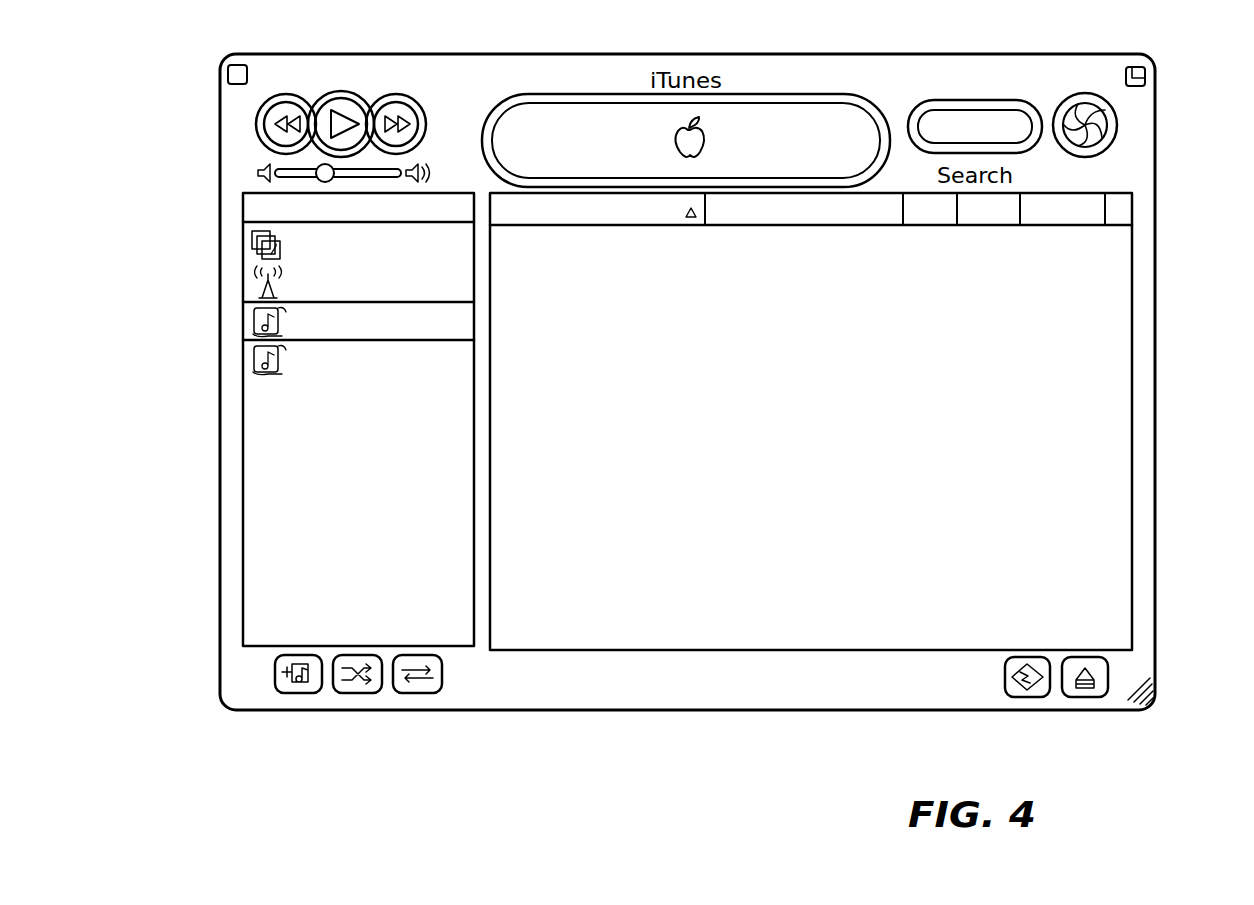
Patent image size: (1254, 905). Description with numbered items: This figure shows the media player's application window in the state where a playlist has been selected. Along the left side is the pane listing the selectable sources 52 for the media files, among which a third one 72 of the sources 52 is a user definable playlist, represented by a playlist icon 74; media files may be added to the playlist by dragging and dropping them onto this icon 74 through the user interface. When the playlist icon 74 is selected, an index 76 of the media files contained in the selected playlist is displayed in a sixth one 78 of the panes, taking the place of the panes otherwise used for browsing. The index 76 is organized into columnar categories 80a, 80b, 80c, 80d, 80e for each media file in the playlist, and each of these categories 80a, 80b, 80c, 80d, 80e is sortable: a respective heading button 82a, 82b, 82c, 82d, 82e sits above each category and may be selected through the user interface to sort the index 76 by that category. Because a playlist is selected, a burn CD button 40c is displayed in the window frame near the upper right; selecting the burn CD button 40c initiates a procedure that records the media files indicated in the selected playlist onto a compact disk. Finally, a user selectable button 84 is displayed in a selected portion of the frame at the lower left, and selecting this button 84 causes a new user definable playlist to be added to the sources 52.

The burn CD button 40c is at (1093, 150).
The selectable sources 52 is at (365, 384).
The third one of the sources 72 is at (455, 327).
The playlist icon 74 is at (323, 419).
The index of media files in the selected playlist 76 is at (868, 475).
The sixth one of the panes 78 is at (1075, 498).
The columnar category 80a is at (607, 300).
The columnar category 80b is at (790, 300).
The columnar category 80c is at (910, 392).
The columnar category 80d is at (966, 392).
The columnar category 80e is at (1032, 392).
The heading button 82a is at (587, 212).
The heading button 82b is at (768, 212).
The heading button 82c is at (932, 222).
The heading button 82d is at (1010, 222).
The heading button 82e is at (1093, 222).
The user selectable button 84 is at (322, 688).